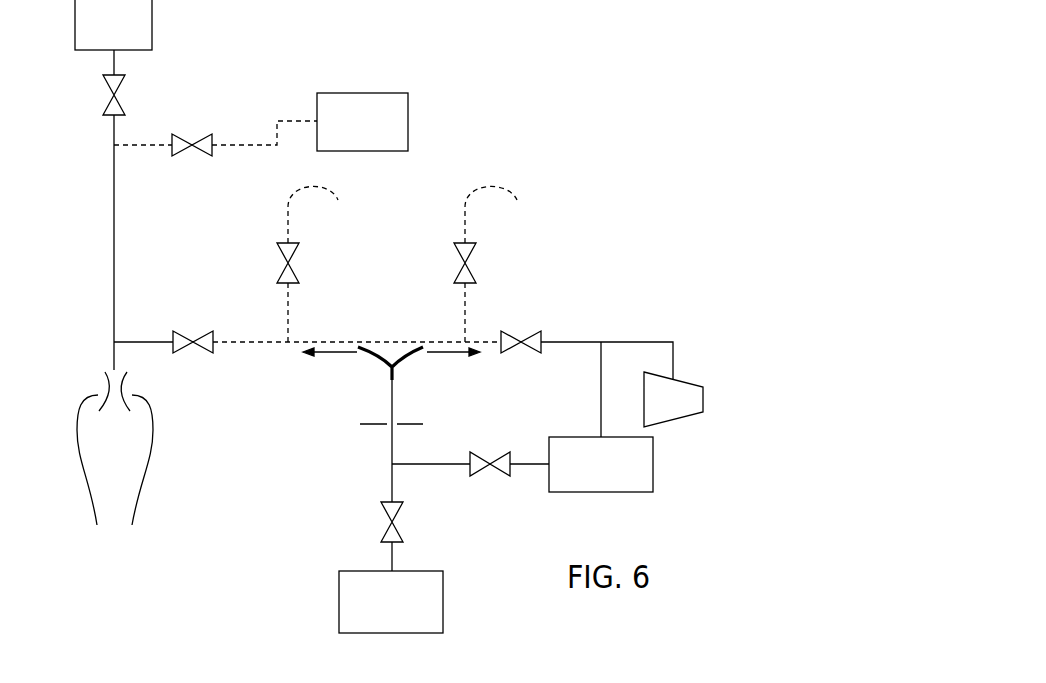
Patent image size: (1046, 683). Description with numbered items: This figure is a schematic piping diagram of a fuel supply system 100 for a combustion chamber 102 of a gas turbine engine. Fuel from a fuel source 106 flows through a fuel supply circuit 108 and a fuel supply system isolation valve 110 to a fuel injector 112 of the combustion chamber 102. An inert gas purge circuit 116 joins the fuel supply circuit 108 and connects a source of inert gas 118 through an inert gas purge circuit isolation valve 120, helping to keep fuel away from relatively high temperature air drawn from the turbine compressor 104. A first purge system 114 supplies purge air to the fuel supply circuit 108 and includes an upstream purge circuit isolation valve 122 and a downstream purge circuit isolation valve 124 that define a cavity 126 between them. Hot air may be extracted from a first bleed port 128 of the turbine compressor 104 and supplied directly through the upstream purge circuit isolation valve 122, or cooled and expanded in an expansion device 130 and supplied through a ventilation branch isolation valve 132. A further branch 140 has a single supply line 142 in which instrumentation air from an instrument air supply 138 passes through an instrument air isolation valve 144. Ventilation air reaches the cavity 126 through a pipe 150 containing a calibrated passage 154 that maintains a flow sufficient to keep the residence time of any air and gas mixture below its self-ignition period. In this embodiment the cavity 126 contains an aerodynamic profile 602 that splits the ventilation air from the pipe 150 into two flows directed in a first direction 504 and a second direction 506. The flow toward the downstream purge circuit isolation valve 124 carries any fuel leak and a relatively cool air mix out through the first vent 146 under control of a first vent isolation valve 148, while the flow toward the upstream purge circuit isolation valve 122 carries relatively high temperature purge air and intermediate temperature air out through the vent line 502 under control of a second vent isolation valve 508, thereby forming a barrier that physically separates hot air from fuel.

The fuel supply system 100 is at (503, 133).
The combustion chamber 102 is at (130, 471).
The turbine compressor 104 is at (704, 398).
The fuel source 106 is at (152, 23).
The fuel supply circuit 108 is at (114, 232).
The fuel supply system isolation valve 110 is at (103, 108).
The fuel injector 112 is at (105, 380).
The first purge system 114 is at (190, 297).
The inert gas purge circuit 116 is at (155, 120).
The source of inert gas 118 is at (408, 120).
The inert gas purge circuit isolation valve 120 is at (212, 137).
The upstream purge circuit isolation valve 122 is at (508, 333).
The downstream purge circuit isolation valve 124 is at (176, 332).
The cavity 126 is at (343, 328).
The first bleed port 128 is at (674, 380).
The expansion device 130 is at (654, 467).
The ventilation branch isolation valve 132 is at (473, 452).
The instrument air supply 138 is at (444, 600).
The branch 140 is at (369, 518).
The supply line 142 is at (394, 557).
The instrument air isolation valve 144 is at (403, 504).
The first vent 146 is at (286, 310).
The first vent isolation valve 148 is at (299, 252).
The pipe 150 is at (390, 392).
The calibrated passage 154 is at (386, 422).
The vent line 502 is at (463, 312).
The first direction 504 is at (335, 355).
The second direction 506 is at (450, 355).
The second vent isolation valve 508 is at (476, 252).
The aerodynamic profile 602 is at (400, 360).